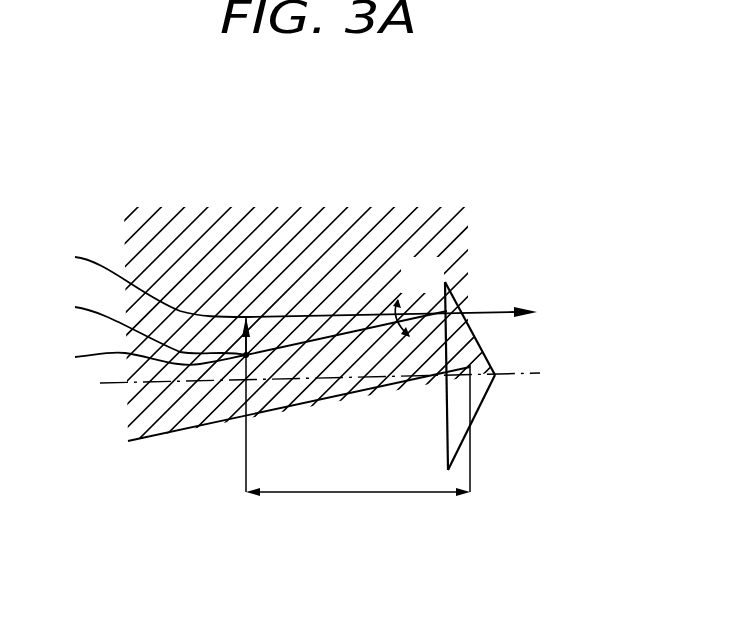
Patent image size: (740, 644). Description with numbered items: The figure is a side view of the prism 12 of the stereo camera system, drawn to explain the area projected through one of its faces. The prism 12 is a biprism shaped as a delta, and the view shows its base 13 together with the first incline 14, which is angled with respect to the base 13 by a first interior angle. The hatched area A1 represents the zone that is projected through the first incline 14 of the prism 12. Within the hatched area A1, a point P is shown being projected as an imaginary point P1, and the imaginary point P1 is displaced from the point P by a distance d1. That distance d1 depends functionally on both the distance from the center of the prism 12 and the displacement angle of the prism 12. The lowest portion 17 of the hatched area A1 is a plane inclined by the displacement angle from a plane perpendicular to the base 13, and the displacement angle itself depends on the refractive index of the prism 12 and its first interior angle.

The prism 12 is at (475, 403).
The base 13 is at (446, 428).
The first incline 14 is at (468, 330).
The lowest portion 17 is at (176, 430).
The hatched area A1 is at (388, 262).
The imaginary point P1 is at (277, 281).
The distance d1 is at (134, 322).
The point P is at (232, 345).